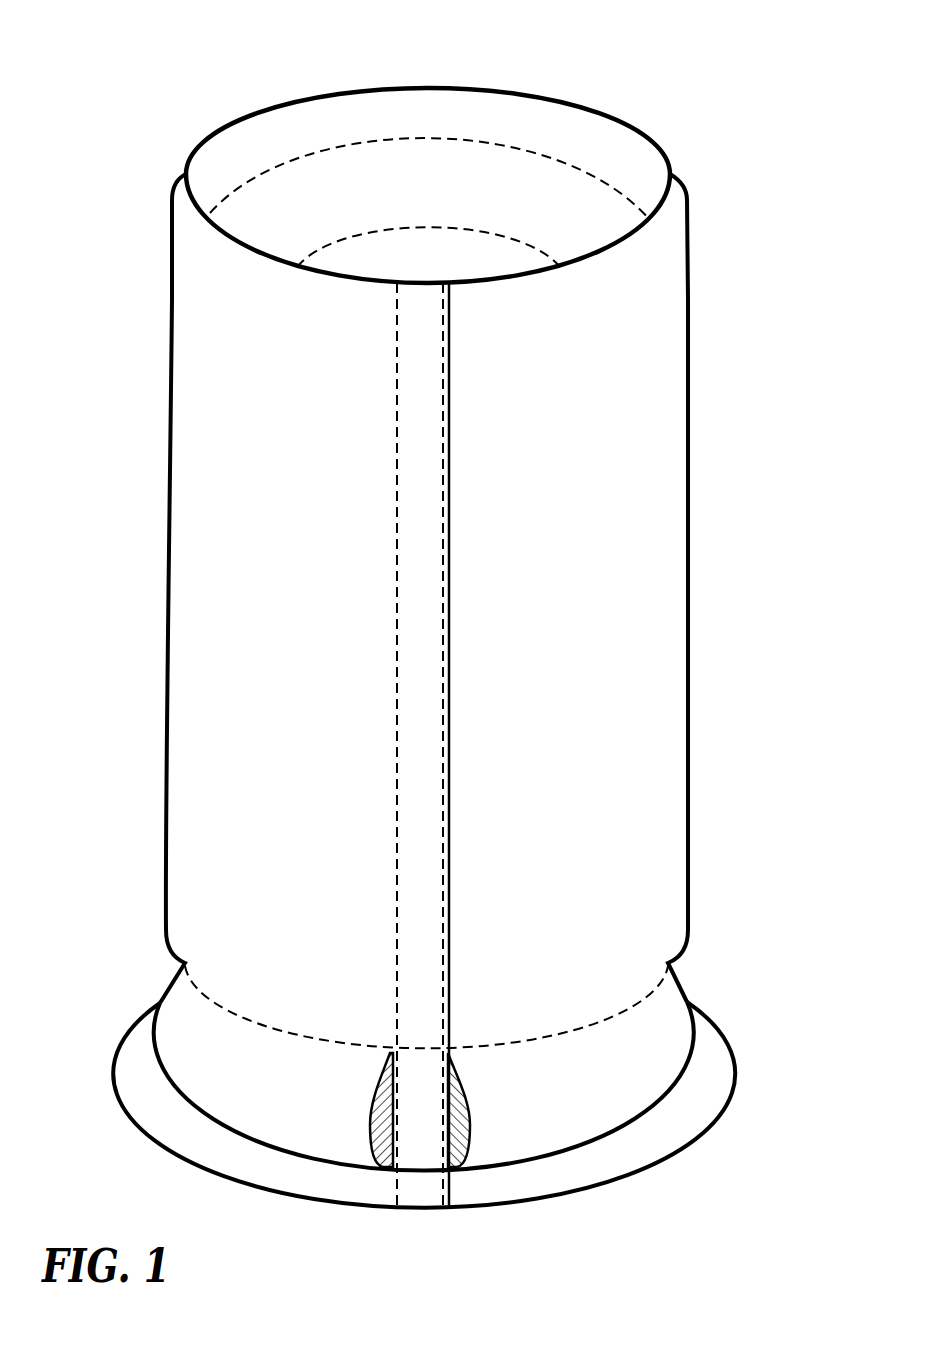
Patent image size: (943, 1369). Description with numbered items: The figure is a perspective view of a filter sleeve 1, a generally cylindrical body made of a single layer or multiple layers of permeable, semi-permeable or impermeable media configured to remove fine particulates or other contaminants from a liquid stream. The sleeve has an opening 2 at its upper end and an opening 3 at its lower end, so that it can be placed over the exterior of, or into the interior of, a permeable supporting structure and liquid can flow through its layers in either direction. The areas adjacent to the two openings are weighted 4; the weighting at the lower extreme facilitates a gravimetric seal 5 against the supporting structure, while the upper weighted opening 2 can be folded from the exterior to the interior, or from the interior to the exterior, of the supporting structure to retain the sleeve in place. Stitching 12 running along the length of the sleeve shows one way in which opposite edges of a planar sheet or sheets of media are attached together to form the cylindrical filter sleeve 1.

The filter sleeve 1 is at (222, 118).
The opening 2 is at (420, 245).
The opening 3 is at (420, 950).
The weighted area 4 is at (565, 208).
The gravimetric seal 5 is at (698, 1145).
The stitching 12 is at (398, 480).